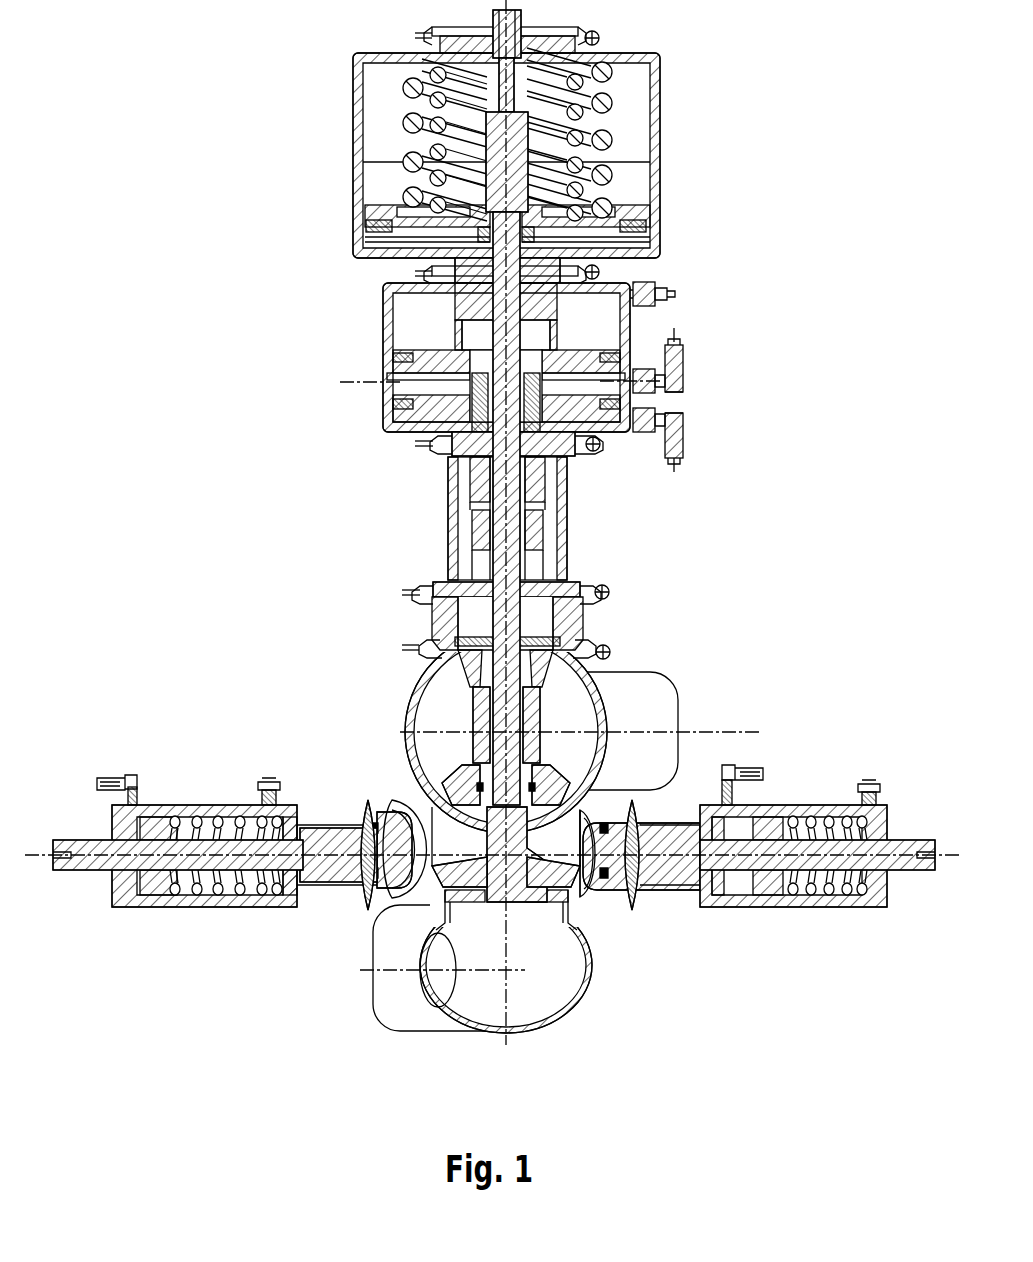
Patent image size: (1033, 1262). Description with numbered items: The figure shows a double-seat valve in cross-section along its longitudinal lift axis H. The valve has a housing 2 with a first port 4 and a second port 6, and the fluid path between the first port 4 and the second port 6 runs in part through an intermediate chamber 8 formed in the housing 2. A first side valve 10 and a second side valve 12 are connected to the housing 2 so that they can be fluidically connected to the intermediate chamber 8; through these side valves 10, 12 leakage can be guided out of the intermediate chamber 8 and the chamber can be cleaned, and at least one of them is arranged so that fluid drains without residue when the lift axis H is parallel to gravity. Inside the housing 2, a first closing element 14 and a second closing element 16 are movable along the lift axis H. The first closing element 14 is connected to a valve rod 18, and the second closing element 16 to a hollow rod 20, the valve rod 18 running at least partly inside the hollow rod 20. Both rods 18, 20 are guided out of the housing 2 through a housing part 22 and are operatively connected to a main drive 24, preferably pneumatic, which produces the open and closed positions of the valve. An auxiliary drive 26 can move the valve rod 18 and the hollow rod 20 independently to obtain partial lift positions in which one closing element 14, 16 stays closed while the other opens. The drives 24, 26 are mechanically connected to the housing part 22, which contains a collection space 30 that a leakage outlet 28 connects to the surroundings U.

The housing 2 is at (427, 820).
The first port 4 is at (650, 688).
The second port 6 is at (427, 910).
The intermediate chamber 8 is at (480, 842).
The first side valve 10 is at (205, 907).
The second side valve 12 is at (830, 907).
The first closing element 14 is at (490, 877).
The second closing element 16 is at (453, 770).
The valve rod 18 is at (528, 812).
The hollow rod 20 is at (550, 707).
The housing part 22 is at (430, 622).
The main drive 24 is at (353, 103).
The auxiliary drive 26 is at (383, 330).
The leakage outlet 28 is at (553, 622).
The collection space 30 is at (583, 583).
The surroundings U is at (636, 616).
The lift axis H is at (503, 1000).